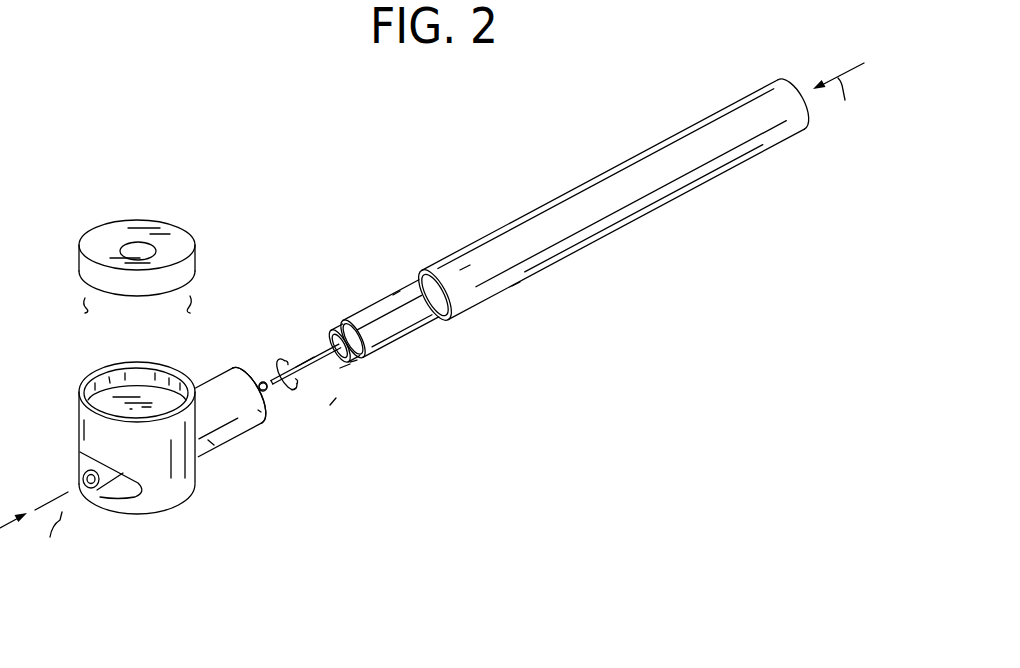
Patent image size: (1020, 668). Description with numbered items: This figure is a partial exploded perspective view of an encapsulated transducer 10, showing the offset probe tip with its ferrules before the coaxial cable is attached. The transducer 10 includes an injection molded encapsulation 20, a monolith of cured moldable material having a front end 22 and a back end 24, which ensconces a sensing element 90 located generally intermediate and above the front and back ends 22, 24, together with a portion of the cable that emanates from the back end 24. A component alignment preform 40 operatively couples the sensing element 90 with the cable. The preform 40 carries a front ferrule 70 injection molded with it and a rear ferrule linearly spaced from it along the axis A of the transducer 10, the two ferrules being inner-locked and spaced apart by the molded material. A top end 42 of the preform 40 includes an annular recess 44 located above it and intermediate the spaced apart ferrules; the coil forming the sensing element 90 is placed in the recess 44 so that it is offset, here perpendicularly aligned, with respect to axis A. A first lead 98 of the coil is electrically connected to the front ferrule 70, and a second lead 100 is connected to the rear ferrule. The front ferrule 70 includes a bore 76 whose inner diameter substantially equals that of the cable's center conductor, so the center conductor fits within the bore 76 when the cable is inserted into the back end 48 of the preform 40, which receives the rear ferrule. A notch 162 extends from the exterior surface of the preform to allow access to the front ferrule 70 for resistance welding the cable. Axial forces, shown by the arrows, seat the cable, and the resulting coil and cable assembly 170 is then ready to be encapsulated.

The encapsulated transducer 10 is at (318, 224).
The injection molded encapsulation 20 is at (194, 520).
The front end 22 is at (63, 415).
The back end 24 is at (191, 378).
The component alignment preform 40 is at (197, 466).
The top end 42 is at (85, 386).
The annular recess 44 is at (132, 378).
The back end 48 is at (198, 390).
The front ferrule 70 is at (115, 498).
The bore 76 is at (88, 495).
The sensing element 90 is at (128, 218).
The first lead 98 is at (86, 300).
The second lead 100 is at (196, 297).
The notch 162 is at (125, 492).
The coil and cable assembly 170 is at (368, 451).